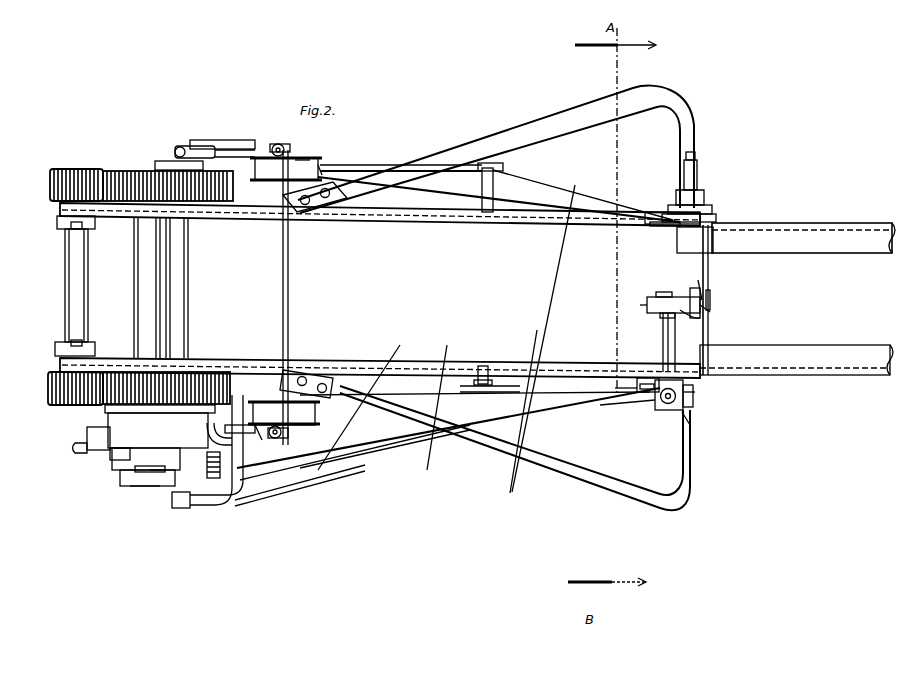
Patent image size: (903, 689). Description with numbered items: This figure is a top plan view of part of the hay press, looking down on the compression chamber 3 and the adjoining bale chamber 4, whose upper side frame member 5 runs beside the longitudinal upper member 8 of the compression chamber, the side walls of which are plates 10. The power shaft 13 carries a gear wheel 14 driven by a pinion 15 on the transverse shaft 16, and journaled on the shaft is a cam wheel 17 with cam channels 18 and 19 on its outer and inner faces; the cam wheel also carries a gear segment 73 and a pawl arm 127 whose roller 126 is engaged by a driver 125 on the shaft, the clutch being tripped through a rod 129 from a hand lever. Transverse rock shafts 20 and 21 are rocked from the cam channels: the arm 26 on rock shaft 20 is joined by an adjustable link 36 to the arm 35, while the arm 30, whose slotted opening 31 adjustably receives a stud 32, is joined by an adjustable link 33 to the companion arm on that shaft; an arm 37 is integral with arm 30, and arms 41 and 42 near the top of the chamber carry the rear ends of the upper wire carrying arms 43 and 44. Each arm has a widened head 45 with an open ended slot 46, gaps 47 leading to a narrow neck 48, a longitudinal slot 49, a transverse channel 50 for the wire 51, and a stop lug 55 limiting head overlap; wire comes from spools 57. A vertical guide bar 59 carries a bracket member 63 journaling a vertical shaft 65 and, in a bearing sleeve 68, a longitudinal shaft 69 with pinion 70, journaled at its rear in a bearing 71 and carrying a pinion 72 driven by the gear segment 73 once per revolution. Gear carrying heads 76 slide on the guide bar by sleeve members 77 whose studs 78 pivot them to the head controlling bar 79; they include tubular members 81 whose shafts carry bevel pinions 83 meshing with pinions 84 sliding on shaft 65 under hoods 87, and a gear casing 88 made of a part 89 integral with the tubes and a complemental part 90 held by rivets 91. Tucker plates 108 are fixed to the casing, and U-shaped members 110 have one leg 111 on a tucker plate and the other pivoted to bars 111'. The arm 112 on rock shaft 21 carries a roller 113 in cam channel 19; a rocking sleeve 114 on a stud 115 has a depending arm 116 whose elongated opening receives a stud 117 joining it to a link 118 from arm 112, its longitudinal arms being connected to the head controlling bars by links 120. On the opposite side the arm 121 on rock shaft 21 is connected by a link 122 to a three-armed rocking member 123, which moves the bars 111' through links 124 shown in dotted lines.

The compression chamber 3 is at (424, 293).
The bale chamber 4 is at (790, 345).
The upper side frame member 5 is at (778, 250).
The upper member 8 is at (540, 205).
The plates 10 is at (545, 331).
The power shaft 13 is at (140, 262).
The gear wheel 14 is at (112, 172).
The driving pinion 15 is at (72, 170).
The transverse shaft 16 is at (66, 246).
The cam wheel 17 is at (76, 444).
The cam channel 18 is at (118, 460).
The cam channel 19 is at (125, 480).
The rock shaft 20 is at (160, 250).
The rock shaft 21 is at (170, 272).
The vertically disposed arm 26 is at (195, 148).
The arm 30 is at (272, 430).
The radially slotted opening 31 is at (278, 142).
The stud 32 is at (290, 145).
The link 33 is at (320, 170).
The arm 35 is at (275, 155).
The longitudinally adjustable link 36 is at (238, 142).
The arm 37 is at (300, 162).
The arm 41 is at (330, 378).
The arm 42 is at (345, 200).
The wire carrying arm 43 is at (400, 368).
The wire carrying arm 44 is at (463, 147).
The head portion 45 is at (704, 198).
The slot 46 is at (708, 210).
The gap 47 is at (680, 195).
The neck portion 48 is at (690, 400).
The slot 49 is at (690, 165).
The transverse channel 50 is at (702, 378).
The wires 51 is at (585, 210).
The stop lugs 55 is at (697, 180).
The spools 57 is at (320, 450).
The guide bar 59 is at (648, 380).
The bracket member 63 is at (660, 412).
The vertical shaft 65 is at (645, 505).
The bearing sleeve 68 is at (660, 410).
The longitudinally disposed shaft 69 is at (388, 440).
The pinion 70 is at (668, 415).
The bearing 71 is at (228, 510).
The pinion 72 is at (215, 505).
The gear segment 73 is at (200, 462).
The gear carrying heads 76 is at (688, 360).
The sleeve members 77 is at (658, 402).
The studs 78 is at (670, 205).
The bar 79 is at (637, 390).
The tubular members 81 is at (712, 312).
The bevel pinions 83 is at (700, 325).
The pinions 84 is at (668, 505).
The hoods 87 is at (682, 420).
The gear casing 88 is at (655, 297).
The casing part 89 is at (647, 305).
The complemental part 90 is at (647, 300).
The rivets 91 is at (693, 292).
The tucker plates 108 is at (712, 298).
The U-shaped members 110 is at (712, 220).
The leg 111 is at (730, 280).
The bars 111' is at (651, 235).
The vertically disposed arm 112 is at (250, 228).
The roller 113 is at (265, 368).
The rocking sleeve 114 is at (498, 384).
The stud 115 is at (495, 368).
The depending arm 116 is at (522, 416).
The stud 117 is at (488, 470).
The link 118 is at (494, 440).
The links 120 is at (440, 420).
The vertically disposed arm 121 is at (140, 488).
The link 122 is at (395, 165).
The three-armed rocking member 123 is at (492, 158).
The links 124 is at (495, 178).
The driver 125 is at (140, 478).
The roller 126 is at (160, 472).
The pawl arm 127 is at (163, 163).
The rod 129 is at (332, 485).